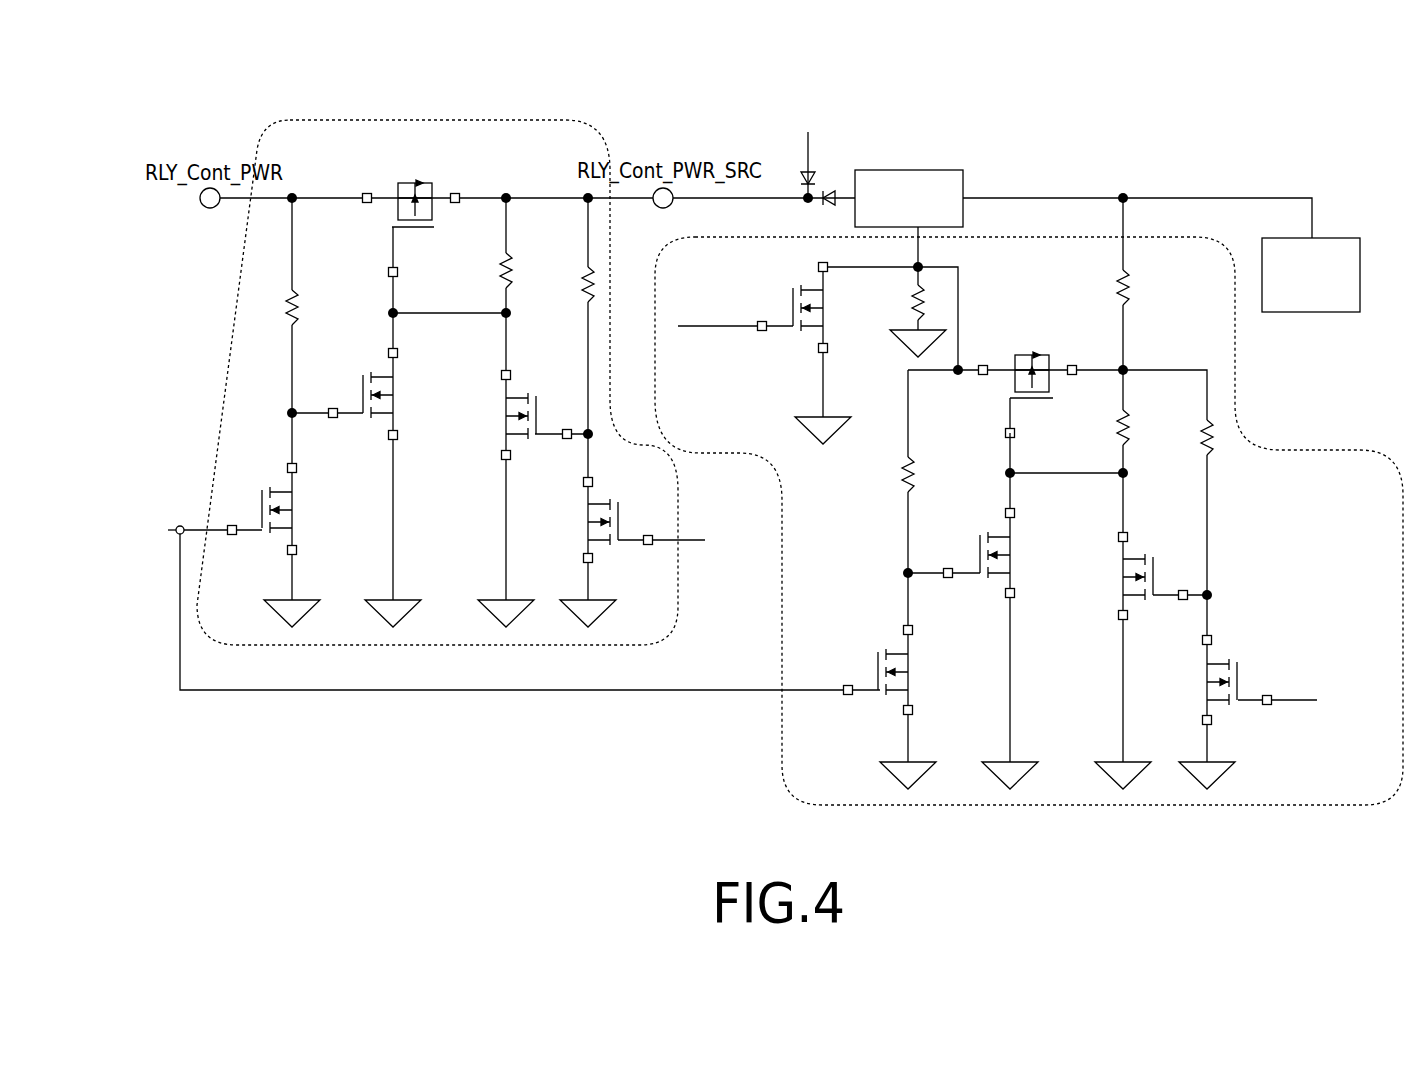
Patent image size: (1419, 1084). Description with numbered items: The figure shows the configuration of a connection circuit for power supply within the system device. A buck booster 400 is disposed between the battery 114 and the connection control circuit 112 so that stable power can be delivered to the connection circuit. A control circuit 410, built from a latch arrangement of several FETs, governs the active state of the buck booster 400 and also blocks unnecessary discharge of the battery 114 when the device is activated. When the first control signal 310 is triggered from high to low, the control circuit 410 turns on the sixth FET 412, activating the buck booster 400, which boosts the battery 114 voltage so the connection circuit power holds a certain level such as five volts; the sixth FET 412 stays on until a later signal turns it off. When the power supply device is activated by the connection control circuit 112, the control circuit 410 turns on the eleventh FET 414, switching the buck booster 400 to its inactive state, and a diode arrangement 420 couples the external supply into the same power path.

The connection control circuit 112 is at (556, 121).
The battery 114 is at (1338, 238).
The first control signal 310 is at (1352, 693).
The buck booster 400 is at (944, 170).
The control circuit 410 is at (1165, 237).
The FET_6 412 is at (1038, 322).
The FET_11 414 is at (751, 274).
The diode 420 is at (812, 150).